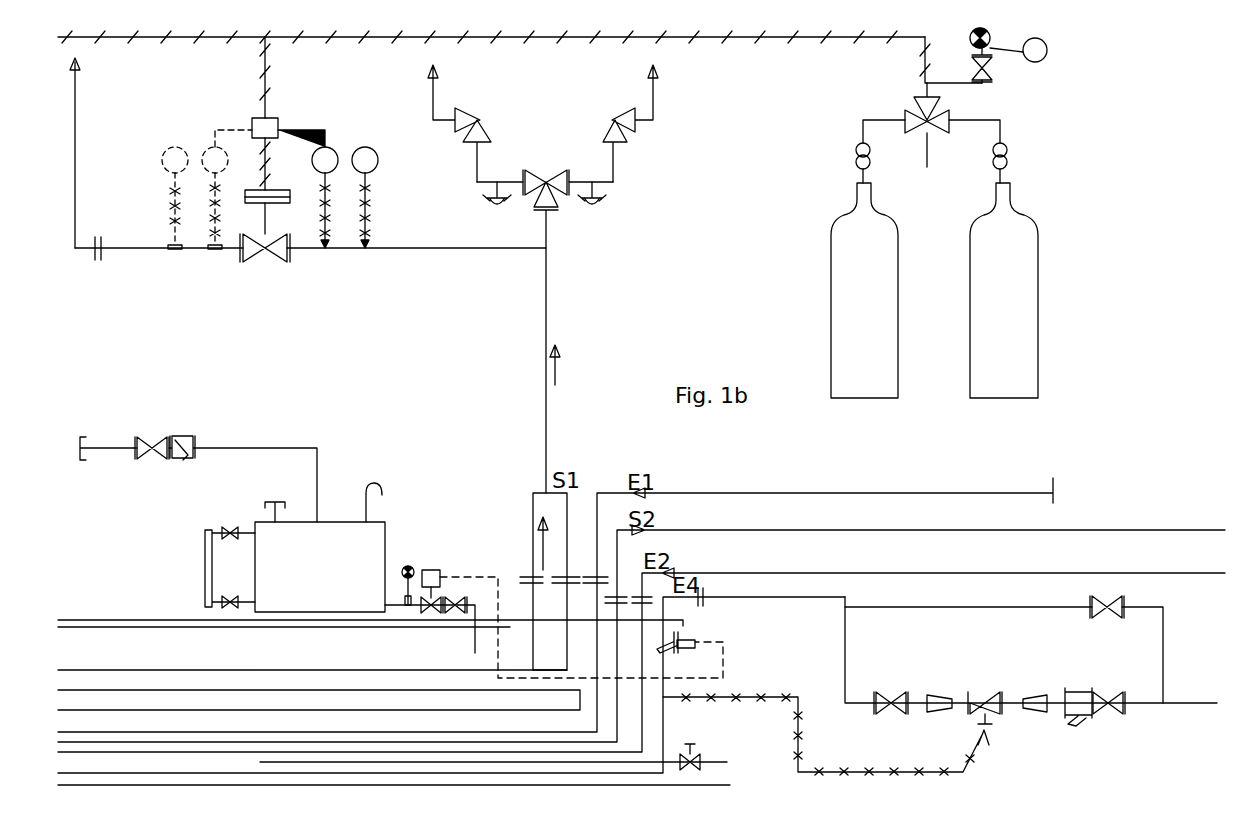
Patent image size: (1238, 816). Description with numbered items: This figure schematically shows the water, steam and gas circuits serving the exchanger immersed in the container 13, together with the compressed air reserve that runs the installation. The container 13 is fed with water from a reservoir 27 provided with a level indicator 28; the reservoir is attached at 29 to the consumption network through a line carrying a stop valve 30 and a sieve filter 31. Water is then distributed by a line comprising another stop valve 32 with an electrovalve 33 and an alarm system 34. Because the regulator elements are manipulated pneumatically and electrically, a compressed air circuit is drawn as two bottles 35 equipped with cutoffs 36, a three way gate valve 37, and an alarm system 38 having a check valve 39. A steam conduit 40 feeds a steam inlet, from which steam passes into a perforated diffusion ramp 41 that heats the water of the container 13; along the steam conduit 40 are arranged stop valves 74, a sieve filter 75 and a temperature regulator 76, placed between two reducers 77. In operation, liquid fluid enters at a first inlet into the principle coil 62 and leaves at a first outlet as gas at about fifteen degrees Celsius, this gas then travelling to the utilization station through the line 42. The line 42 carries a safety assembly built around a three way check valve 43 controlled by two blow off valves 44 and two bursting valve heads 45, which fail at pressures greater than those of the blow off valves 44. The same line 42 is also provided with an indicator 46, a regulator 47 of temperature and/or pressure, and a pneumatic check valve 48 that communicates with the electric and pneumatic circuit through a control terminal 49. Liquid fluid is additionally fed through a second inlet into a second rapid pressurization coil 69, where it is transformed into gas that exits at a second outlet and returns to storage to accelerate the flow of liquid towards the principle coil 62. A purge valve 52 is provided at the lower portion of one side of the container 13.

The container 13 is at (100, 650).
The reservoir 27 is at (320, 547).
The level indicator 28 is at (205, 566).
The attachment to consumption network 29 is at (88, 455).
The stop valve 30 is at (150, 437).
The sieve filter 31 is at (182, 437).
The stop valve 32 is at (456, 598).
The electrovalve 33 is at (432, 614).
The alarm system 34 is at (408, 565).
The bottles 35 is at (980, 330).
The cutoffs 36 is at (860, 153).
The three way gate valve 37 is at (927, 139).
The alarm system 38 is at (992, 36).
The check valve 39 is at (992, 78).
The steam conduit 40 is at (1190, 703).
The perforated diffusion ramp 41 is at (372, 762).
The line 42 is at (548, 318).
The three way check valve 43 is at (548, 170).
The blow off valves 44 is at (625, 130).
The bursting valve heads 45 is at (592, 205).
The indicator 46 is at (378, 160).
The regulator 47 is at (328, 147).
The pneumatic check valve 48 is at (265, 262).
The control terminal 49 is at (267, 128).
The purge valve 52 is at (693, 750).
The principle coil 62 is at (280, 733).
The rapid pressurization coil 69 is at (165, 752).
The stop valves 74 is at (1100, 616).
The sieve filter 75 is at (1083, 690).
The temperature regulator 76 is at (988, 735).
The reducers 77 is at (942, 692).